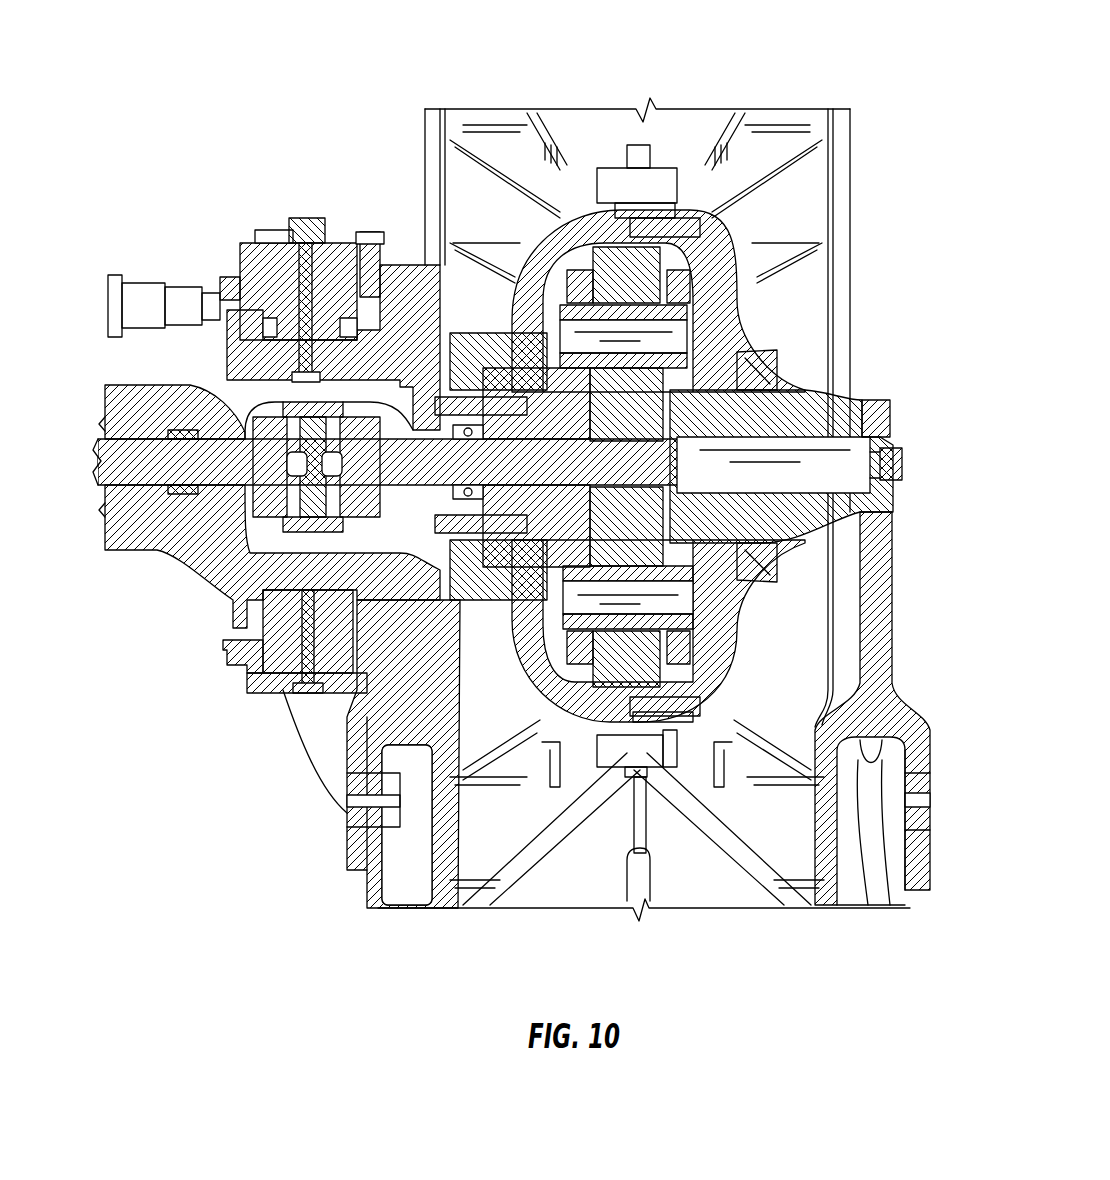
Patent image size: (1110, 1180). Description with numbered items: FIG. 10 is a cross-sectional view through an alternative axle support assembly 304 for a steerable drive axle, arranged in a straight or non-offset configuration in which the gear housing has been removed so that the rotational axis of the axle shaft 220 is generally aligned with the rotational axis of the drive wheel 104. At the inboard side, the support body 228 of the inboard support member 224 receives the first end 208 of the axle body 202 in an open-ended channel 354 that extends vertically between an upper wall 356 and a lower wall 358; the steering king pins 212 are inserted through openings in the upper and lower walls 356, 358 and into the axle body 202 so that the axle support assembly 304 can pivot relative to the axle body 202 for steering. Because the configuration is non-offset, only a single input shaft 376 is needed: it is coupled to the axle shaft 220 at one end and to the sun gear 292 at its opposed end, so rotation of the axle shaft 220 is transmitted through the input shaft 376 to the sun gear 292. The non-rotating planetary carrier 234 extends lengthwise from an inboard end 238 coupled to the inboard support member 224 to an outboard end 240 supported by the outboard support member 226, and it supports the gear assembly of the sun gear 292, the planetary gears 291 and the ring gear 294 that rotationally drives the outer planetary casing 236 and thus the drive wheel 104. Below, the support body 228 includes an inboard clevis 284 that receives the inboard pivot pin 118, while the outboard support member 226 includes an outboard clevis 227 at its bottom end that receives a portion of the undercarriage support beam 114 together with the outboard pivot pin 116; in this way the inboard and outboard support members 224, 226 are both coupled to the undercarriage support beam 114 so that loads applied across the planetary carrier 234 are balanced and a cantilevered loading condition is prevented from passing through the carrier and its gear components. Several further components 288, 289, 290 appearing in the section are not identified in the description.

The drive wheel 104 is at (810, 109).
The undercarriage support beam 114 is at (402, 898).
The outboard pivot pin 116 is at (917, 785).
The inboard pivot pin 118 is at (357, 782).
The axle body 202 is at (160, 556).
The first end 208 is at (222, 356).
The steering king pins 212 is at (243, 232).
The axle shaft 220 is at (122, 470).
The inboard support member 224 is at (411, 278).
The outboard support member 226 is at (893, 647).
The outboard clevis 227 is at (905, 872).
The support body 228 is at (407, 655).
The planetary carrier 234 is at (784, 410).
The outer planetary casing 236 is at (743, 312).
The inboard end 238 is at (455, 533).
The outboard end 240 is at (903, 478).
The inboard clevis 284 is at (345, 868).
The hub 288 is at (890, 545).
The cap 289 is at (880, 400).
The bearing carrier insert 290 is at (572, 278).
The planetary gears 291 is at (620, 263).
The sun gear 292 is at (633, 512).
The ring gear 294 is at (622, 745).
The axle support assembly 304 is at (288, 100).
The open-ended channel 354 is at (225, 630).
The upper wall 356 is at (218, 262).
The lower wall 358 is at (223, 657).
The input shaft 376 is at (512, 458).